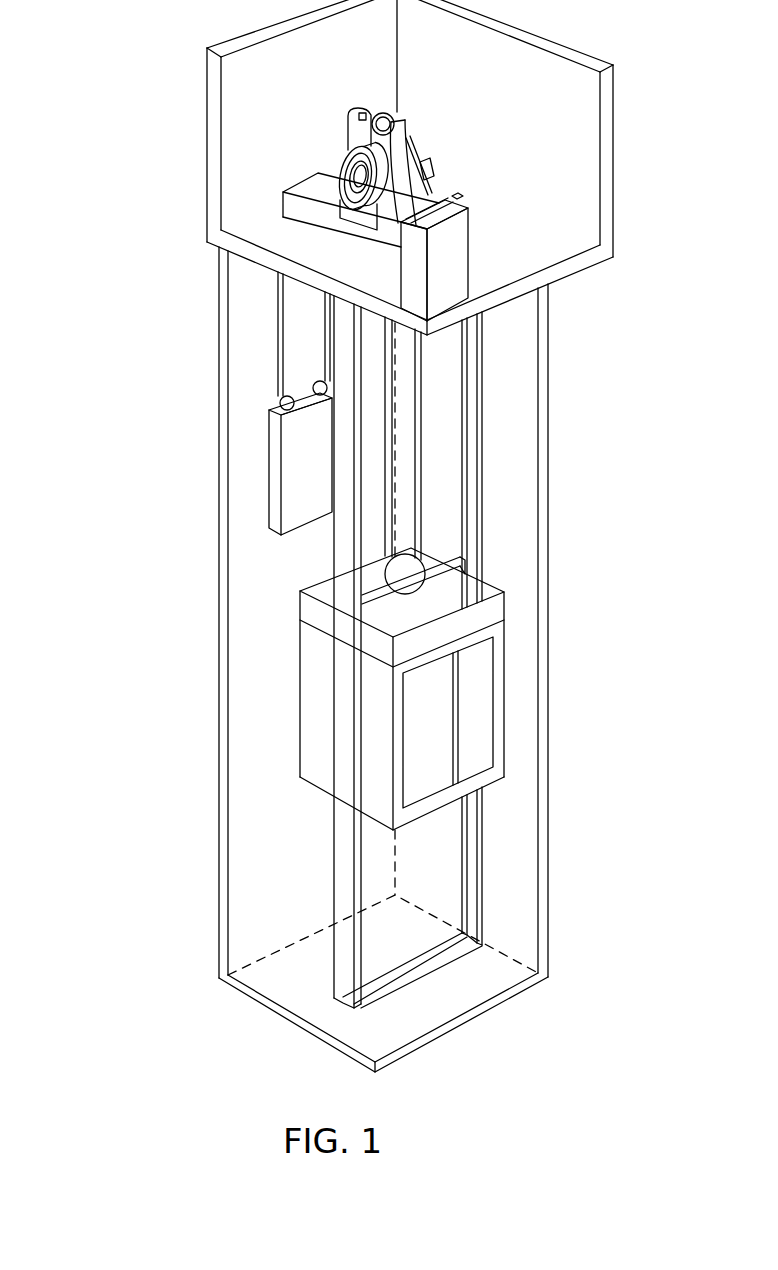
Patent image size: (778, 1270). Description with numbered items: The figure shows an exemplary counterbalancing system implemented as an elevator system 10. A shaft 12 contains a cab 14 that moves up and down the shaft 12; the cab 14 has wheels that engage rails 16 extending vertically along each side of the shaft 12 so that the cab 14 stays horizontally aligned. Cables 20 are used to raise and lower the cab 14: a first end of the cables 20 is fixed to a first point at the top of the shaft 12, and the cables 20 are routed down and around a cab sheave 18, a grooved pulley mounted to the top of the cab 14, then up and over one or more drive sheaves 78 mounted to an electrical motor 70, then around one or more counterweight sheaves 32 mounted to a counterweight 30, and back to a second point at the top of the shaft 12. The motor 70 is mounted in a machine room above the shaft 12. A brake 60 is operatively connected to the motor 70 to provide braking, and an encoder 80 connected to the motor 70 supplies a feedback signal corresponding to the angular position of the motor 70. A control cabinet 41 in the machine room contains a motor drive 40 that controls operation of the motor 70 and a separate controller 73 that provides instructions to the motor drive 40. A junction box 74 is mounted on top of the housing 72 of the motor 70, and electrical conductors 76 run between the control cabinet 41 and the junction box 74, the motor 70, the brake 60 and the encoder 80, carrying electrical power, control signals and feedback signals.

The elevator system 10 is at (135, 192).
The shaft 12 is at (516, 548).
The cab 14 is at (482, 777).
The rails 16 is at (343, 896).
The cab sheave 18 is at (414, 590).
The cables 20 is at (418, 470).
The counterweight 30 is at (300, 532).
The counterweight sheave 32 is at (288, 395).
The motor drive 40 is at (462, 191).
The control cabinet 41 is at (462, 275).
The brake 60 is at (427, 172).
The electrical motor 70 is at (336, 96).
The housing 72 is at (414, 146).
The controller 73 is at (474, 237).
The junction box 74 is at (365, 112).
The electrical conductors 76 is at (443, 185).
The drive sheave 78 is at (337, 150).
The encoder 80 is at (337, 184).